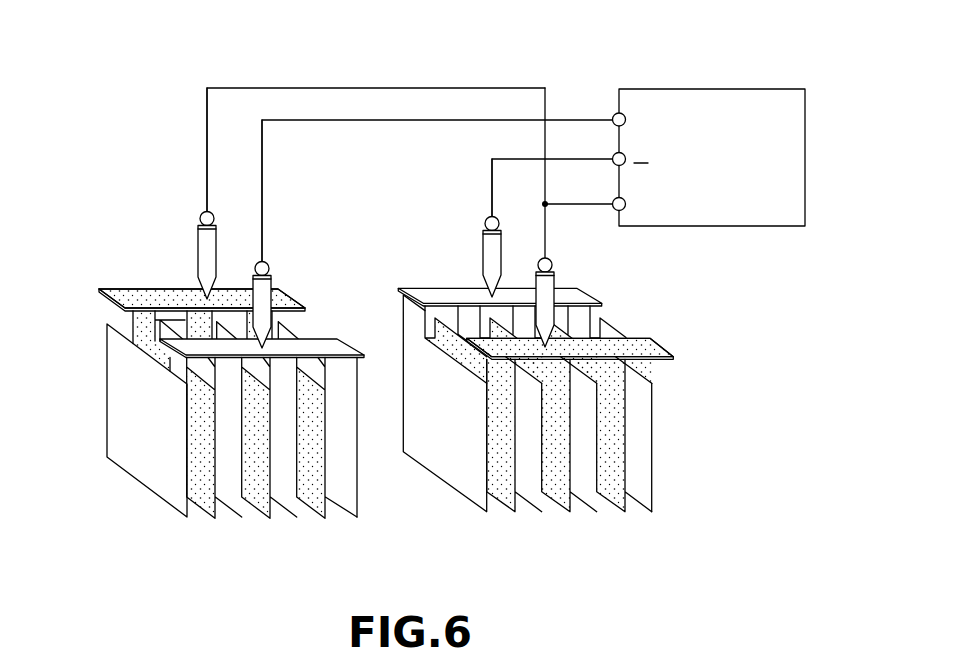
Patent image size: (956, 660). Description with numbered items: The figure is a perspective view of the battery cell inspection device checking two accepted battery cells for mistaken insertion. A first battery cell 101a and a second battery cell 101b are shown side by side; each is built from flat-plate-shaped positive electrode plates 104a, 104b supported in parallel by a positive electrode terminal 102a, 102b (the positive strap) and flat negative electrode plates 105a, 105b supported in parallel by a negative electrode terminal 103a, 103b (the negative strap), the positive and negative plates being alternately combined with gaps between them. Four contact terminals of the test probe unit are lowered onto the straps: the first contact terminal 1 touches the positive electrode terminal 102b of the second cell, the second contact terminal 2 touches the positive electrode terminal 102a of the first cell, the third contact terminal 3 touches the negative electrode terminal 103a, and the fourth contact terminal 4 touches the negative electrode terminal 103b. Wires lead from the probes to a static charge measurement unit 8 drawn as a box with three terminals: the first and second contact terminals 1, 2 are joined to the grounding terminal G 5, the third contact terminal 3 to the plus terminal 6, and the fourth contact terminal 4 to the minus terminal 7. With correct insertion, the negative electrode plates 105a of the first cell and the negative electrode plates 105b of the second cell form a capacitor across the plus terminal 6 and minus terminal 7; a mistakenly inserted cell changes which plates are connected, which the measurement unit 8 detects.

The first contact terminal 1 is at (556, 272).
The second contact terminal 2 is at (197, 238).
The third contact terminal 3 is at (272, 272).
The fourth contact terminal 4 is at (483, 258).
The ground terminal G 5 is at (612, 208).
The plus terminal 6 is at (612, 116).
The minus terminal 7 is at (612, 162).
The static charge measurement unit 8 is at (693, 100).
The first battery cell 101a is at (131, 191).
The second battery cell 101b is at (432, 231).
The positive electrode terminal 102a is at (135, 291).
The positive electrode terminal 102b is at (668, 342).
The negative electrode terminal 103a is at (313, 346).
The negative electrode terminal 103b is at (583, 295).
The positive electrode plates 104a is at (207, 503).
The positive electrode plates 104b is at (505, 497).
The negative electrode plates 105a is at (137, 448).
The negative electrode plates 105b is at (442, 462).